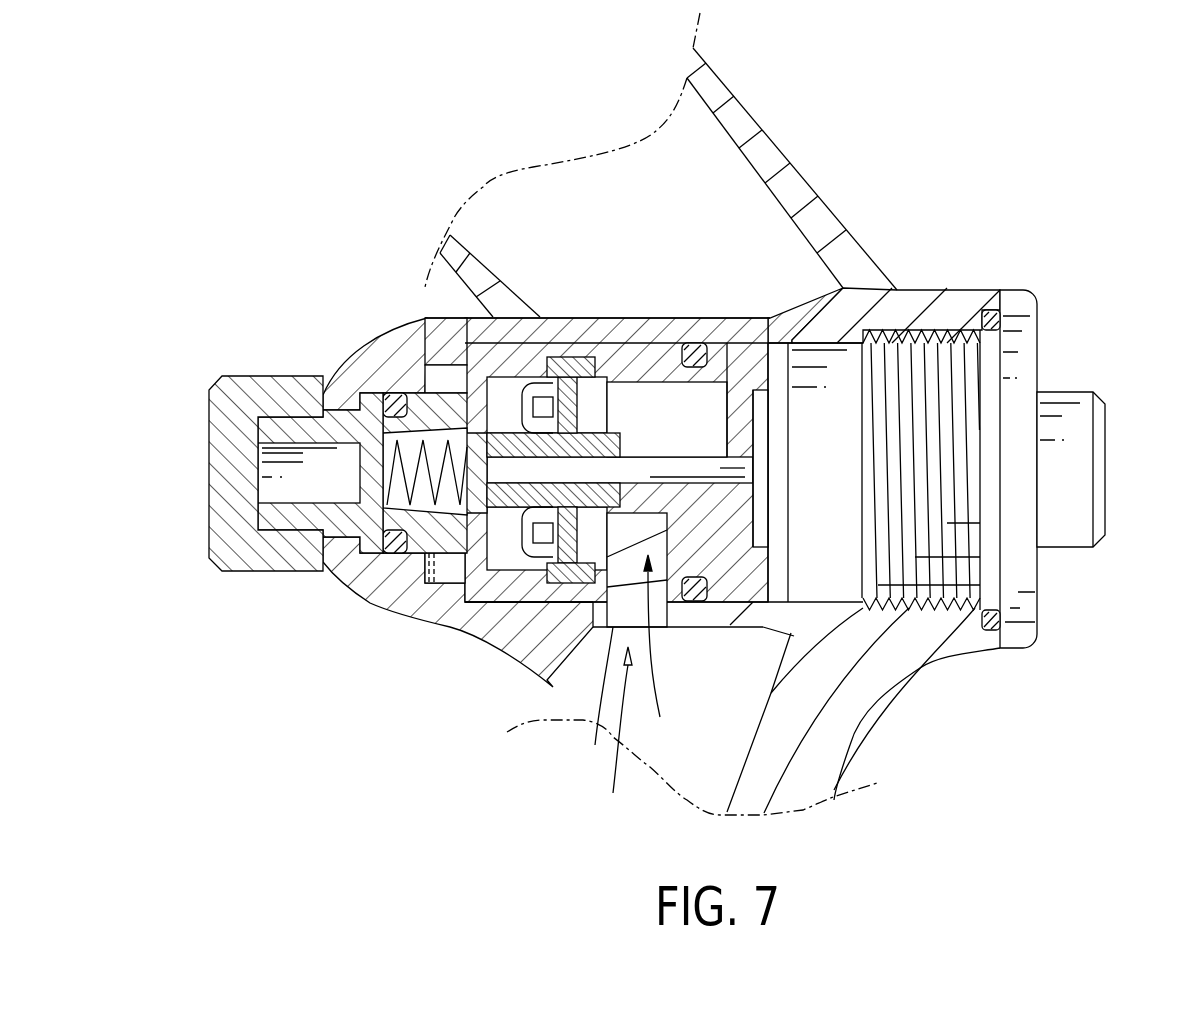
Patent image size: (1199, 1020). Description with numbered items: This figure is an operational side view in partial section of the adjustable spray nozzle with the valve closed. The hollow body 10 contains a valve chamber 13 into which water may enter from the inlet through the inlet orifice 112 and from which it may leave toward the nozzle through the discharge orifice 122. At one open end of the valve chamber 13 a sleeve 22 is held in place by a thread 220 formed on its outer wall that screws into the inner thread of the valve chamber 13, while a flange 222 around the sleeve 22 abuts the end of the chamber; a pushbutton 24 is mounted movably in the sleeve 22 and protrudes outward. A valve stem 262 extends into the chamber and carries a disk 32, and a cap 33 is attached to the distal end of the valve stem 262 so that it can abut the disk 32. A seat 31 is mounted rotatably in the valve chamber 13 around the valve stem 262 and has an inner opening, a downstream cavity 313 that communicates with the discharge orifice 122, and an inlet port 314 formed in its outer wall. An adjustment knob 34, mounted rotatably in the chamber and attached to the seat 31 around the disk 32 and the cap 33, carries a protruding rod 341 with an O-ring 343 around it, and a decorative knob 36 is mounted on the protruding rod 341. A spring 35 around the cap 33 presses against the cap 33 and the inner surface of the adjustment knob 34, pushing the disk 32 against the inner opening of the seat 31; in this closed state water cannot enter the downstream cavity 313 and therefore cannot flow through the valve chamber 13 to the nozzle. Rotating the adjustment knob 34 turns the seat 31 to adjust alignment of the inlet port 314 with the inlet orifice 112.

The body 10 is at (807, 798).
The valve chamber 13 is at (510, 602).
The sleeve 22 is at (833, 592).
The pushbutton 24 is at (1067, 400).
The seat 31 is at (660, 350).
The disk 32 is at (575, 318).
The cap 33 is at (515, 480).
The adjustment knob 34 is at (480, 357).
The spring 35 is at (365, 555).
The decorative knob 36 is at (250, 570).
The inlet orifice 112 is at (658, 622).
The discharge orifice 122 is at (760, 312).
The thread 220 is at (932, 597).
The flange 222 is at (1020, 602).
The valve stem 262 is at (497, 548).
The downstream cavity 313 is at (710, 400).
The inlet port 314 is at (608, 710).
The protruding rod 341 is at (347, 417).
The O-ring 343 is at (392, 397).